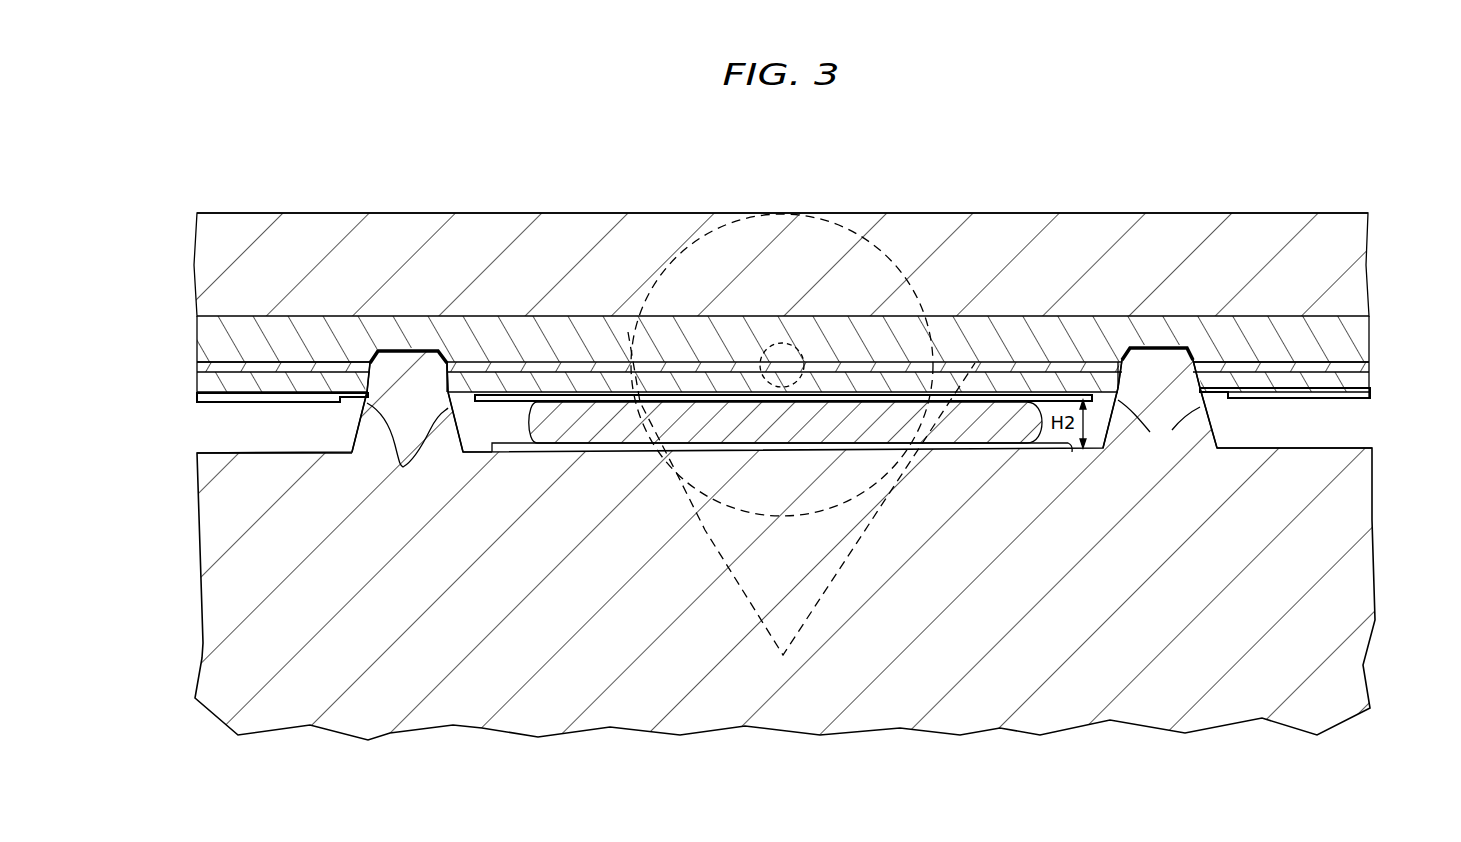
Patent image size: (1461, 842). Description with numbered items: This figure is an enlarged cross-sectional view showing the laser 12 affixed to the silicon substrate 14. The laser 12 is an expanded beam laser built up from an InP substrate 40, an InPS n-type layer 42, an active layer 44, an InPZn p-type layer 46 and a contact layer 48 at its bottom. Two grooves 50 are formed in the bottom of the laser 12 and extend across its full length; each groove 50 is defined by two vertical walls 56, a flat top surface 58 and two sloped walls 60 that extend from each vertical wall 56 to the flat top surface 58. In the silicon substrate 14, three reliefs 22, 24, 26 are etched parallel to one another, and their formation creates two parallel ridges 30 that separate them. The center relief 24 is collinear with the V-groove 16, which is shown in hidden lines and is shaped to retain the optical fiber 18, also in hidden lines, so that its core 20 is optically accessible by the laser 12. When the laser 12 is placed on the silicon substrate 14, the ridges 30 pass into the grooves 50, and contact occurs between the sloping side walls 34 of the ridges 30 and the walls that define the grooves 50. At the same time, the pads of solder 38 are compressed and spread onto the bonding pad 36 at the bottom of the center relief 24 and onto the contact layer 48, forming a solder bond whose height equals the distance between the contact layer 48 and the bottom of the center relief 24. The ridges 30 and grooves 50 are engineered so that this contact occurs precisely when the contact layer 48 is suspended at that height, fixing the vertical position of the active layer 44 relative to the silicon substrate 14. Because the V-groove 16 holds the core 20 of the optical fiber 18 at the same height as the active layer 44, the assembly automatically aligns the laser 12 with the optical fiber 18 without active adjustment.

The laser 12 is at (1205, 212).
The silicon substrate 14 is at (1342, 553).
The V-groove 16 is at (713, 548).
The optical fiber 18 is at (852, 213).
The core 20 is at (768, 349).
The side relief 22 is at (1350, 438).
The center relief 24 is at (473, 425).
The side relief 26 is at (215, 432).
The ridge 30 is at (377, 437).
The sloping side wall 34 is at (783, 448).
The bonding pad 36 is at (1053, 445).
The pad of solder 38 is at (1007, 421).
The InP substrate 40 is at (1350, 252).
The InPS n-type layer 42 is at (1362, 335).
The active layer 44 is at (1362, 365).
The InPZn p-type layer 46 is at (1362, 382).
The contact layer 48 is at (1342, 393).
The groove 50 is at (383, 350).
The vertical wall 56 is at (363, 372).
The flat top surface 58 is at (413, 349).
The sloped wall 60 is at (453, 357).